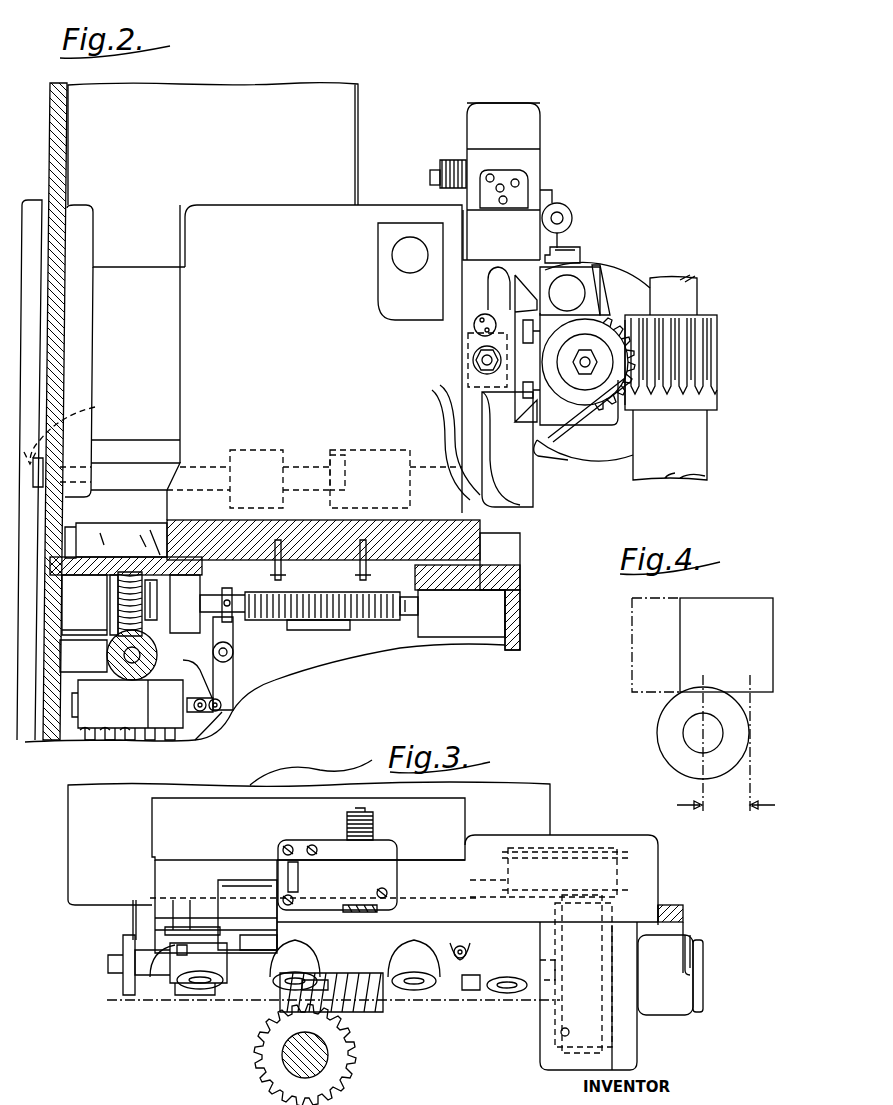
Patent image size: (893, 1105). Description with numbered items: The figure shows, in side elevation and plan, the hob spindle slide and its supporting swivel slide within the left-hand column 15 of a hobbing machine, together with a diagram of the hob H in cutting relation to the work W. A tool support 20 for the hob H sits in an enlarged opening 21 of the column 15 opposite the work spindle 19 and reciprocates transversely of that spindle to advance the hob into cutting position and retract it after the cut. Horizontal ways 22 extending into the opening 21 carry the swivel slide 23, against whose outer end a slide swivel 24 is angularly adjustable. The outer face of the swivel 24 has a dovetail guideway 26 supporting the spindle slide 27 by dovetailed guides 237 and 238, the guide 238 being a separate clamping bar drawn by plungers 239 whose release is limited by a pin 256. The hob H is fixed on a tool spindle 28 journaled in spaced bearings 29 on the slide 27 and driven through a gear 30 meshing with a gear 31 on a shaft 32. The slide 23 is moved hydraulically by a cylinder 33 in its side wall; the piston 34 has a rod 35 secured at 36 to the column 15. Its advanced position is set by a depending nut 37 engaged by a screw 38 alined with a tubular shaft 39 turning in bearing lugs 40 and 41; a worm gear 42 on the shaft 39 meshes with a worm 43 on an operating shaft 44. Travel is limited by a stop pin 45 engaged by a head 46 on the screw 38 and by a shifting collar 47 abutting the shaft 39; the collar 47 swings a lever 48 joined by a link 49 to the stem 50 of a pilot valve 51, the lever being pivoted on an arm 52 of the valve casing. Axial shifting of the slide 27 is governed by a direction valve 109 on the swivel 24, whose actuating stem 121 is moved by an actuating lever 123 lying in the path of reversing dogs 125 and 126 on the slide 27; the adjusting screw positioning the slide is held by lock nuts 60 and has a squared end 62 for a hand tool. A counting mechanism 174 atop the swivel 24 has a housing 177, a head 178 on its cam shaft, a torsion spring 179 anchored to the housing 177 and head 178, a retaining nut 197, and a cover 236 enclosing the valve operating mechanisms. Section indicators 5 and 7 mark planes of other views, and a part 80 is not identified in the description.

In FIG. 2, the left-hand column 15 is at (65, 155).
In FIG. 2, the work spindle 19 is at (703, 445).
In FIG. 3, the work spindle 19 is at (322, 1055).
In FIG. 2, the tool support 20 is at (378, 196).
In FIG. 2, the enlarged recess or opening 21 is at (318, 102).
In FIG. 2, the ways 22 is at (520, 545).
In FIG. 3, the ways 22 is at (250, 785).
In FIG. 2, the swivel slide 23 is at (222, 215).
In FIG. 3, the swivel slide 23 is at (160, 822).
In FIG. 2, the slide swivel 24 is at (520, 480).
In FIG. 3, the slide swivel 24 is at (165, 873).
In FIG. 2, the dovetail guideway 26 is at (530, 260).
In FIG. 2, the spindle slide 27 is at (565, 420).
In FIG. 3, the spindle slide 27 is at (440, 930).
In FIG. 2, the tool spindle 28 is at (598, 385).
In FIG. 3, the tool spindle 28 is at (555, 960).
In FIG. 2, the bearings 29 is at (585, 380).
In FIG. 3, the bearings 29 is at (195, 990).
In FIG. 3, the gear 30 is at (558, 1033).
In FIG. 3, the gear 31 is at (588, 852).
In FIG. 3, the shaft 32 is at (490, 880).
In FIG. 2, the cylinder 33 is at (358, 450).
In FIG. 2, the piston 34 is at (292, 450).
In FIG. 2, the piston rod 35 is at (140, 478).
In FIG. 2, the rod anchorage 36 is at (72, 442).
In FIG. 2, the depending nut 37 is at (320, 628).
In FIG. 2, the screw 38 is at (270, 620).
In FIG. 2, the tubular shaft 39 is at (163, 600).
In FIG. 2, the bearing lug 40 is at (85, 630).
In FIG. 2, the bearing lug 41 is at (185, 625).
In FIG. 2, the worm gear 42 is at (118, 596).
In FIG. 2, the worm 43 is at (108, 640).
In FIG. 2, the operating shaft 44 is at (132, 665).
In FIG. 2, the stop pin 45 is at (410, 605).
In FIG. 2, the head 46 is at (400, 615).
In FIG. 2, the shifting collar 47 is at (233, 645).
In FIG. 2, the lever 48 is at (230, 668).
In FIG. 2, the link 49 is at (225, 718).
In FIG. 2, the valve stem 50 is at (198, 742).
In FIG. 2, the pilot valve 51 is at (102, 738).
In FIG. 2, the arm 52 is at (222, 705).
In FIG. 2, the lock nuts 60 is at (474, 352).
In FIG. 2, the squared end 62 is at (473, 362).
In FIG. 2, the stop 80 is at (474, 325).
In FIG. 2, the direction valve 109 is at (568, 207).
In FIG. 3, the direction valve 109 is at (252, 925).
In FIG. 3, the actuating stem 121 is at (210, 930).
In FIG. 3, the actuating lever 123 is at (165, 927).
In FIG. 2, the reversing dog 125 is at (580, 247).
In FIG. 3, the reversing dog 125 is at (162, 945).
In FIG. 3, the reversing dog 126 is at (290, 933).
In FIG. 2, the counting mechanism 174 is at (522, 124).
In FIG. 3, the counting mechanism 174 is at (338, 838).
In FIG. 2, the housing 177 is at (532, 163).
In FIG. 2, the head 178 is at (434, 180).
In FIG. 2, the torsion spring 179 is at (457, 160).
In FIG. 3, the torsion spring 179 is at (375, 826).
In FIG. 3, the nut 197 is at (363, 914).
In FIG. 2, the cover 236 is at (482, 108).
In FIG. 2, the dovetailed guide 237 is at (470, 410).
In FIG. 2, the clamping bar 238 is at (518, 285).
In FIG. 2, the plungers 239 is at (612, 265).
In FIG. 3, the plungers 239 is at (280, 990).
In FIG. 3, the pin 256 is at (248, 1000).
In FIG. 2, the section line 5- 5 is at (472, 308).
In FIG. 2, the section line 7- 7 is at (630, 312).
In FIG. 2, the work W is at (705, 395).
In FIG. 3, the work W is at (268, 1058).
In FIG. 4, the work W is at (662, 750).
In FIG. 2, the hob H is at (620, 395).
In FIG. 3, the hob H is at (385, 1010).
In FIG. 4, the hob H is at (680, 618).